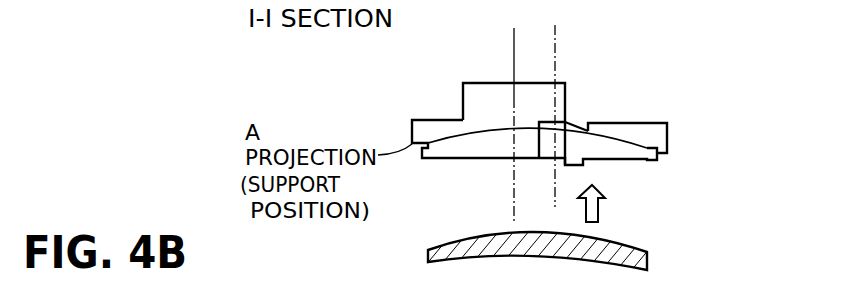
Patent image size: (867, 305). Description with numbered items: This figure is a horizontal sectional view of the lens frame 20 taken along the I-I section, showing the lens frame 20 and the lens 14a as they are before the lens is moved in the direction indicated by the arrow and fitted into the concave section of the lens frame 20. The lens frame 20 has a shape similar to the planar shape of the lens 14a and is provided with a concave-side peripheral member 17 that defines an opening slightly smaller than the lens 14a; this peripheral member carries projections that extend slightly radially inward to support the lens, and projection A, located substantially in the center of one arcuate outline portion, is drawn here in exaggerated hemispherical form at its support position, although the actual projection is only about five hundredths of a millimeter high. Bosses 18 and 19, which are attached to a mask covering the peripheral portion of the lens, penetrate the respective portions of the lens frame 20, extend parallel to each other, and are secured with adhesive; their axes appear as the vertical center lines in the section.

The lens frame 20 is at (432, 127).
The concave-side peripheral member 17 is at (478, 92).
The boss 18 is at (556, 97).
The boss 19 is at (512, 172).
The lens 14a is at (625, 252).